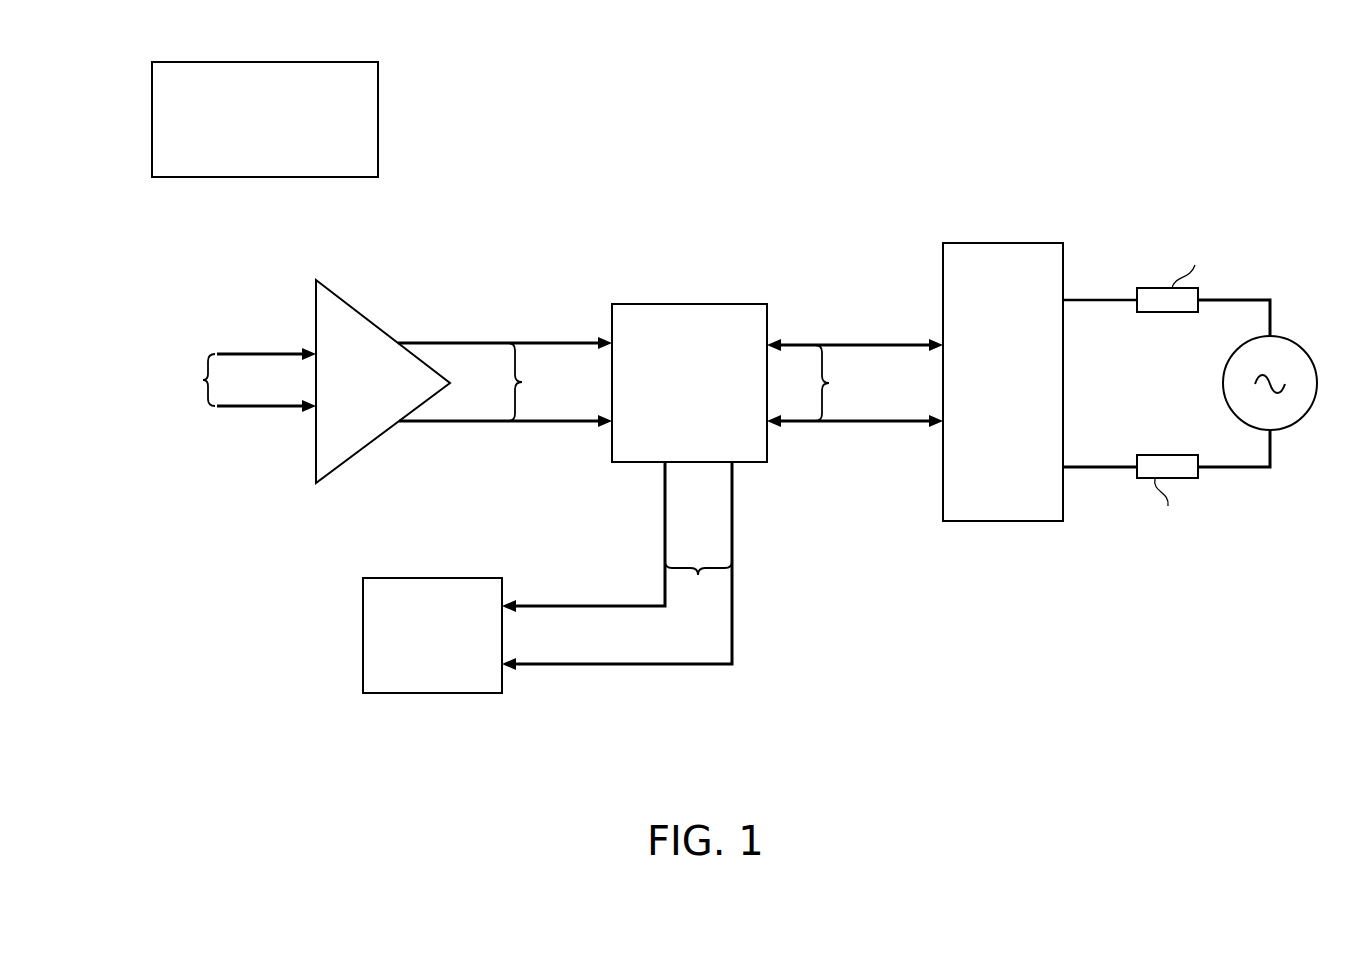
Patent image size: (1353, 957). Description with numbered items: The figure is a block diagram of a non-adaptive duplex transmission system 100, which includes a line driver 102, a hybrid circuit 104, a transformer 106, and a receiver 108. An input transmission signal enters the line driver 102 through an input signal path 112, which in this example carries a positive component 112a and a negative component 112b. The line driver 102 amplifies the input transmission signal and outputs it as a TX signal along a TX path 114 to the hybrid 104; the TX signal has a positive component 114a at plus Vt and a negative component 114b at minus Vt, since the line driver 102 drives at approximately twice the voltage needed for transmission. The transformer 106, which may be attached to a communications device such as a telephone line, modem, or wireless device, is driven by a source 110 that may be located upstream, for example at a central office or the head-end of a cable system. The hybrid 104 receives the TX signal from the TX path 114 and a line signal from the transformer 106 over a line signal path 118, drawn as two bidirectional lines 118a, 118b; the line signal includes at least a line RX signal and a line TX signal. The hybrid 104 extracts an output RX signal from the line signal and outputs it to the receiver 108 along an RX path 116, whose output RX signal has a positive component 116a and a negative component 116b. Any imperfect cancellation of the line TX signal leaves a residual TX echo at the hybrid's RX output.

The non-adaptive duplex transmission system 100 is at (743, 433).
The line driver 102 is at (318, 283).
The hybrid circuit 104 is at (690, 303).
The transformer 106 is at (1000, 243).
The receiver 108 is at (437, 693).
The source 110 is at (1293, 346).
The input signal path 112 is at (191, 380).
The positive component of the input transmission signal 112a is at (232, 352).
The negative component of the input transmission signal 112b is at (232, 410).
The TX path 114 is at (533, 382).
The positive component of the TX signal 114a is at (470, 343).
The negative component of the TX signal 114b is at (462, 423).
The RX path 116 is at (698, 583).
The positive component of the output RX signal 116a is at (735, 514).
The negative component of the output RX signal 116b is at (662, 514).
The line signal path 118 is at (840, 383).
The line signal path component 118a is at (845, 344).
The line signal path component 118b is at (843, 424).